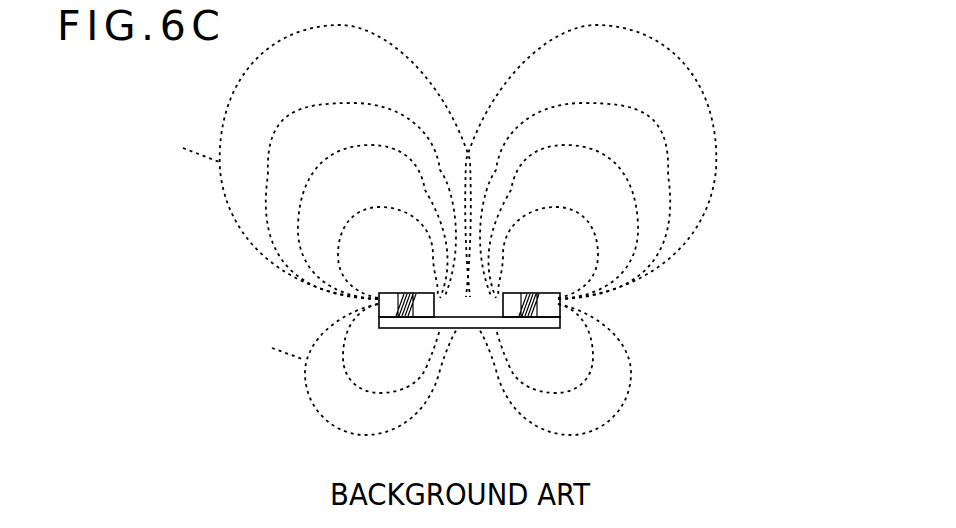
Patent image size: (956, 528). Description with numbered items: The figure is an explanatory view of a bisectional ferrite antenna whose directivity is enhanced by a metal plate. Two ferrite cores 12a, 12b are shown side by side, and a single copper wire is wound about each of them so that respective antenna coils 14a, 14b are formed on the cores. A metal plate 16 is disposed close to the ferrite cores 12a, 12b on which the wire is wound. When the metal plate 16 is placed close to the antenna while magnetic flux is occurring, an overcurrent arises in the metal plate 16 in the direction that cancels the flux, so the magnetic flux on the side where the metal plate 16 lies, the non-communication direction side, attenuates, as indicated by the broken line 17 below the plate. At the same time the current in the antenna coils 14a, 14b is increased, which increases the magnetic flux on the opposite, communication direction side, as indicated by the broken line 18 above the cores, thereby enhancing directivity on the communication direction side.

The ferrite core 12a is at (381, 292).
The ferrite core 12b is at (554, 292).
The antenna coil 14a is at (404, 293).
The antenna coil 14b is at (531, 293).
The metal plate 16 is at (471, 322).
The broken line 17 is at (439, 369).
The broken line 18 is at (437, 162).